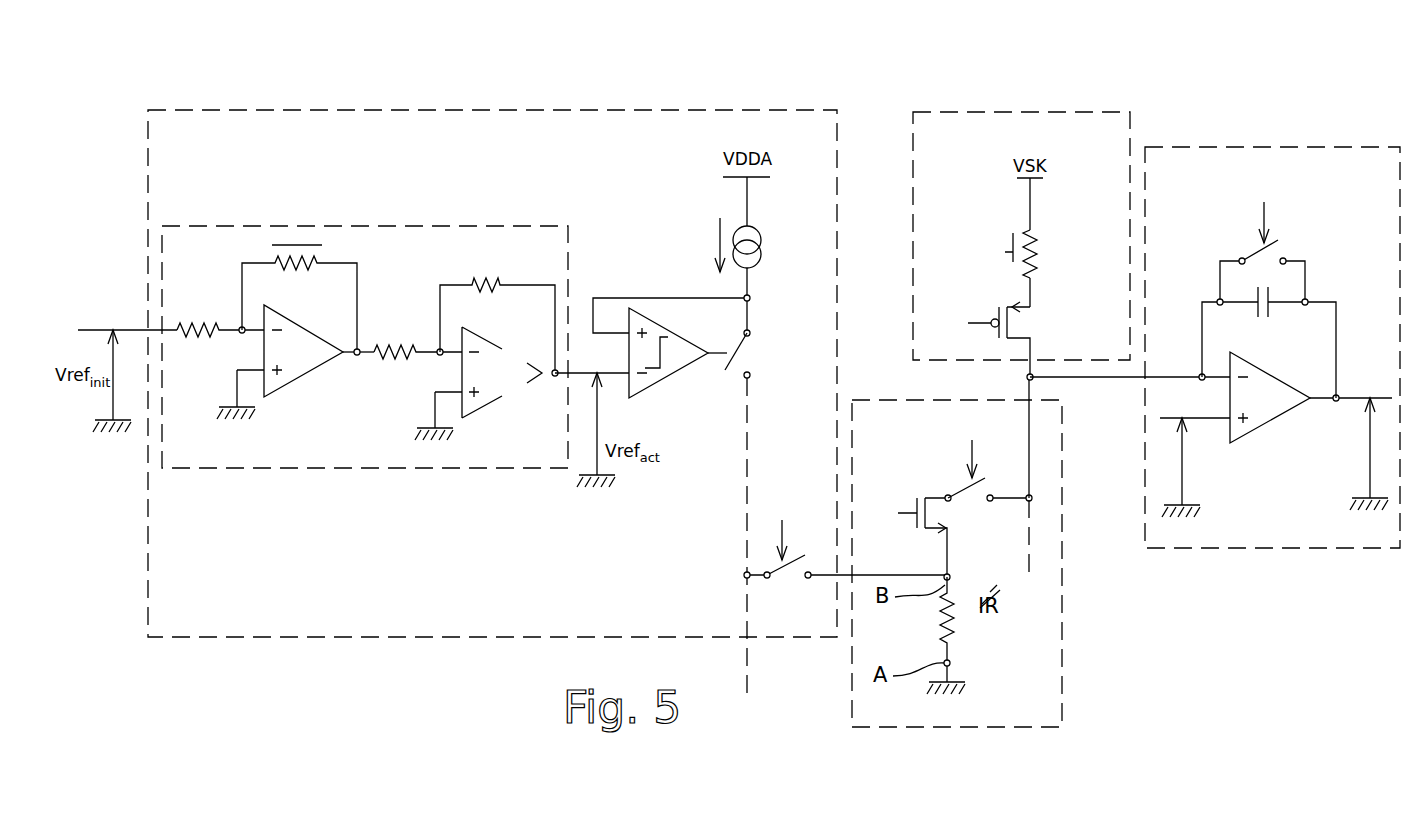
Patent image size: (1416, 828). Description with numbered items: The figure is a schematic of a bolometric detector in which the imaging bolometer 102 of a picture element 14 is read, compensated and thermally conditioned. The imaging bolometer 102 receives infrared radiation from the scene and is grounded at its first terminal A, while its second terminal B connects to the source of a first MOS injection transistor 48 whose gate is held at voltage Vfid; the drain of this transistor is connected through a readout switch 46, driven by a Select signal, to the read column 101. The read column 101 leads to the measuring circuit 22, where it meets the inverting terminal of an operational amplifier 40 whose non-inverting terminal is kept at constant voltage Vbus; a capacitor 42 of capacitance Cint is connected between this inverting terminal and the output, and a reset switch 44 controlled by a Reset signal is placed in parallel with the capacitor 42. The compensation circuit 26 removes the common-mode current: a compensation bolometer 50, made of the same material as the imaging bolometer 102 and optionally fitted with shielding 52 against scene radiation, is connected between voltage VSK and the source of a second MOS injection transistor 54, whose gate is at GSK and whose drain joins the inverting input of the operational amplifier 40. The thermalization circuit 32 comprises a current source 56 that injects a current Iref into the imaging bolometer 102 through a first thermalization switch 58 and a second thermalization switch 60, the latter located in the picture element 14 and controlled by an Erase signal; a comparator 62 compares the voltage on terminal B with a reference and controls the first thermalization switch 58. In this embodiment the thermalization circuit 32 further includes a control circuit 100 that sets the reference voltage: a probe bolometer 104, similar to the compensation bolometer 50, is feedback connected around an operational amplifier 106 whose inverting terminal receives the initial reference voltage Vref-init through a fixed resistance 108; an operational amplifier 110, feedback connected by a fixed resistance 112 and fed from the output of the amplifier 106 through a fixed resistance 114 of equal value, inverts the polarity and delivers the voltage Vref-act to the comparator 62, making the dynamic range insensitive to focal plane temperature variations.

The thermalization circuit 32 is at (372, 110).
The control circuit 100 is at (460, 227).
The bolometer 104 is at (303, 240).
The fixed resistance 108 is at (197, 322).
The operational amplifier 106 is at (297, 370).
The fixed resistance 114 is at (410, 345).
The fixed resistance 112 is at (502, 252).
The operational amplifier 110 is at (505, 420).
The comparator 62 is at (675, 378).
The current source 56 is at (750, 248).
The first controllable thermalization switch 58 is at (745, 355).
The second controllable thermalization switch 60 is at (787, 585).
The picture element 14 is at (1062, 660).
The first MOS injection transistor 48 is at (917, 505).
The readout switch 46 is at (945, 492).
The read column 101 is at (1010, 500).
The imaging bolometer 102 is at (938, 622).
The compensation circuit 26 is at (1120, 112).
The shielding 52 is at (1010, 240).
The compensation bolometer 50 is at (1040, 265).
The second MOS injection transistor 54 is at (1020, 320).
The measuring circuit 22 is at (1265, 147).
The reset switch 44 is at (1262, 250).
The capacitor 42 is at (1270, 310).
The operational amplifier 40 is at (1272, 408).